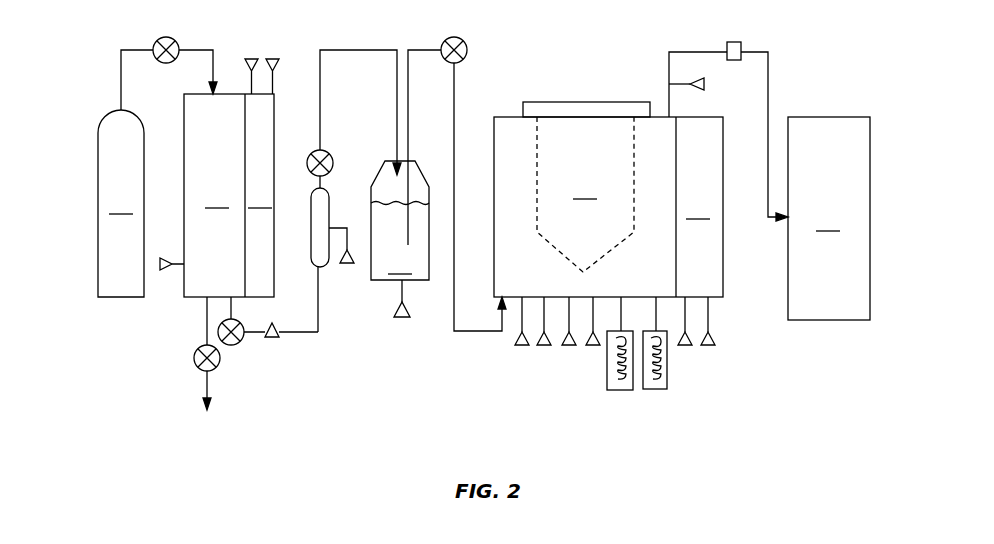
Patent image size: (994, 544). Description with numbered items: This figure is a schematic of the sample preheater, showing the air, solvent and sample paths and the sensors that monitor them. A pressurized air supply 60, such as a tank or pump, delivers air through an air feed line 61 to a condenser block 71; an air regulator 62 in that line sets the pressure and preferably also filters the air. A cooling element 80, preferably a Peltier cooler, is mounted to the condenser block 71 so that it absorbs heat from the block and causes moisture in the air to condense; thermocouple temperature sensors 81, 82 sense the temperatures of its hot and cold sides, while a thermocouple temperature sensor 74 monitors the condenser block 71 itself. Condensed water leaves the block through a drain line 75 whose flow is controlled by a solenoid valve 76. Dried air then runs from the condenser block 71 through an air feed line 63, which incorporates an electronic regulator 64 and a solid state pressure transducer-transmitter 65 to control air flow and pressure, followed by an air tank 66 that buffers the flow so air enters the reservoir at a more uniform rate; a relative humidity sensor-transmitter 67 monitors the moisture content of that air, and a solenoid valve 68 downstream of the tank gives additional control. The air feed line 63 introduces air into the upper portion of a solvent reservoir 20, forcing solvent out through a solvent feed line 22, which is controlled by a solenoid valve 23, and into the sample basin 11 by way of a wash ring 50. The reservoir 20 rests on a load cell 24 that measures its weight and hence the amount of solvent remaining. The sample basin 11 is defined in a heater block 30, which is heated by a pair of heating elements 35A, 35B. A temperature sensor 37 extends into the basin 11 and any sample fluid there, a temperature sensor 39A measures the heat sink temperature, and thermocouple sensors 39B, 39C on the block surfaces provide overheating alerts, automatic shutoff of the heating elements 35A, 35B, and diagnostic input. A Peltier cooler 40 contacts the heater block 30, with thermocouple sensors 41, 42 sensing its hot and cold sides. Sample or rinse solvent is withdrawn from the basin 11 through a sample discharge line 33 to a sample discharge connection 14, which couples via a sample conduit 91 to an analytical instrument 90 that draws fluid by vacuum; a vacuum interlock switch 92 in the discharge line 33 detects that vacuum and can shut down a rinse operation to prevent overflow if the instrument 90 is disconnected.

The sample basin 11 is at (633, 160).
The sample discharge connection 14 is at (735, 42).
The solvent reservoir 20 is at (400, 220).
The solvent feed line 22 is at (425, 48).
The solenoid valve 23 is at (457, 37).
The load cell 24 is at (403, 318).
The heater block 30 is at (608, 207).
The sample discharge line 33 is at (722, 50).
The heating element 35A is at (619, 391).
The heating element 35B is at (653, 391).
The temperature sensor 37 is at (593, 346).
The temperature sensor 39A is at (517, 350).
The thermocouple sensor 39B is at (542, 346).
The thermocouple sensor 39C is at (568, 346).
The Peltier cooler 40 is at (693, 207).
The thermocouple sensor 41 is at (709, 346).
The thermocouple sensor 42 is at (686, 346).
The wash ring 50 is at (580, 101).
The pressurized air supply 60 is at (121, 203).
The air feed line 61 is at (201, 49).
The air regulator 62 is at (161, 38).
The air feed line 63 is at (318, 312).
The electronic regulator 64 is at (241, 347).
The solid state pressure transducer-transmitter 65 is at (274, 338).
The air tank 66 is at (311, 243).
The relative humidity sensor-transmitter 67 is at (347, 265).
The solenoid valve 68 is at (309, 158).
The condenser block 71 is at (229, 195).
The thermocouple temperature sensor 74 is at (167, 270).
The drain line 75 is at (203, 386).
The solenoid valve 76 is at (216, 375).
The cooling element 80 is at (259, 195).
The thermocouple temperature sensor 81 is at (274, 58).
The thermocouple temperature sensor 82 is at (250, 58).
The analytical instrument 90 is at (829, 218).
The sample conduit 91 is at (770, 72).
The vacuum interlock switch 92 is at (704, 84).